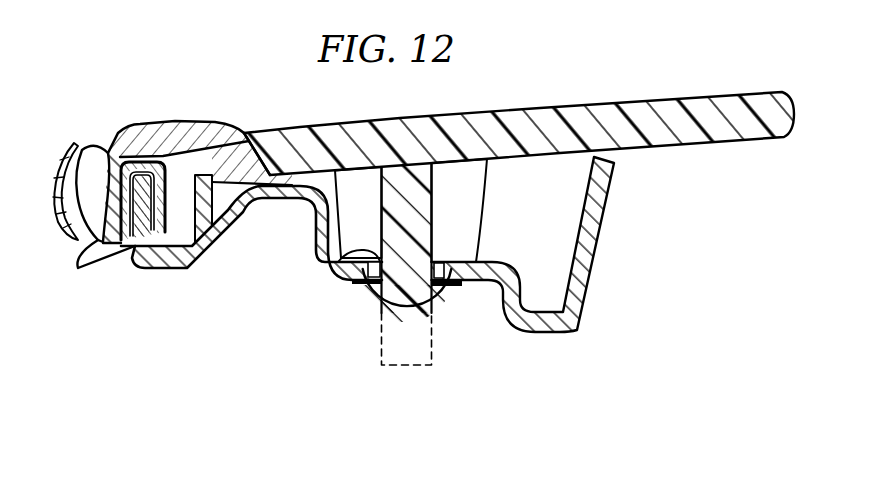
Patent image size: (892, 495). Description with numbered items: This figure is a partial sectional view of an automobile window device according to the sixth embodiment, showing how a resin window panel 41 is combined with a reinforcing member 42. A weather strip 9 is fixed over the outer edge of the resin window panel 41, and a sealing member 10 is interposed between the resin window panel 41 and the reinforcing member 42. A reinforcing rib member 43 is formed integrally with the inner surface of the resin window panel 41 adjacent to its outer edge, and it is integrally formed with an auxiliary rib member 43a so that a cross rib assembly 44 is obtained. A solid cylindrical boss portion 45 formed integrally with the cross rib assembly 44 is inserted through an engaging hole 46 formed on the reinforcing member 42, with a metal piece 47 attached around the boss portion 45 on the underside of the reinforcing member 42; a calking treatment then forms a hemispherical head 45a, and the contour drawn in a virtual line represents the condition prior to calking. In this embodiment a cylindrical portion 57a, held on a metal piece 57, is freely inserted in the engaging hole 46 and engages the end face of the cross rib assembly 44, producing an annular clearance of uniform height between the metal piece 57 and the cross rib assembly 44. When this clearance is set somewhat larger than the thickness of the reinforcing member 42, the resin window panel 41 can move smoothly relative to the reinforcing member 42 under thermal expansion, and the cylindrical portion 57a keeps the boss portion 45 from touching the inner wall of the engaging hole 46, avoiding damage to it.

The weather strip 9 is at (166, 122).
The sealing member 10 is at (278, 188).
The resin window panel 41 is at (566, 106).
The reinforcing member 42 is at (539, 332).
The reinforcing rib member 43 is at (420, 207).
The auxiliary rib member 43a is at (538, 251).
The cross rib assembly 44 is at (459, 236).
The solid cylindrical boss portion 45 is at (410, 292).
The hemispherical head 45a is at (449, 297).
The engaging hole 46 is at (343, 264).
The metal piece 47 is at (452, 286).
The metal piece 57 is at (354, 288).
The cylindrical portion 57a is at (370, 260).